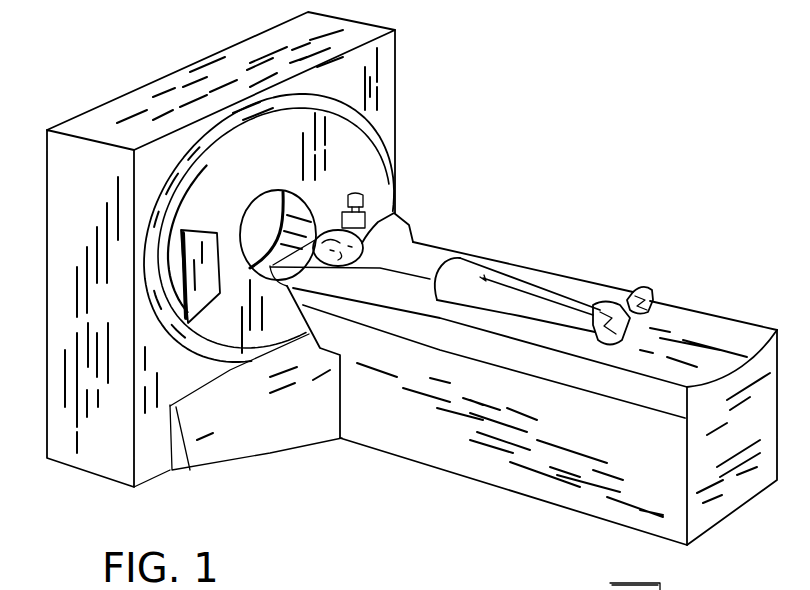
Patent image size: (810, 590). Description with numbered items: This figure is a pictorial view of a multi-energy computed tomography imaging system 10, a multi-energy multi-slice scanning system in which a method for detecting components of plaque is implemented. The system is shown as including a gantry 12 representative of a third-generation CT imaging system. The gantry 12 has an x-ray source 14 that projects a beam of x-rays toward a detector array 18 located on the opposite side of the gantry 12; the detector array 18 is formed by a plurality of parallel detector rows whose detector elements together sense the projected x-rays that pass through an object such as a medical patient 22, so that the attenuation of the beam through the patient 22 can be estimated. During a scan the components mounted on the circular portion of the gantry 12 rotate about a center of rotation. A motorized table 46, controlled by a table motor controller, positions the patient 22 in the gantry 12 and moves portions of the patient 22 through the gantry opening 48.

The multi-energy computed tomography imaging system 10 is at (313, 440).
The gantry 12 is at (210, 132).
The x-ray source 14 is at (390, 196).
The detector array 18 is at (197, 306).
The patient 22 is at (423, 242).
The motorized table 46 is at (427, 443).
The gantry opening 48 is at (315, 202).